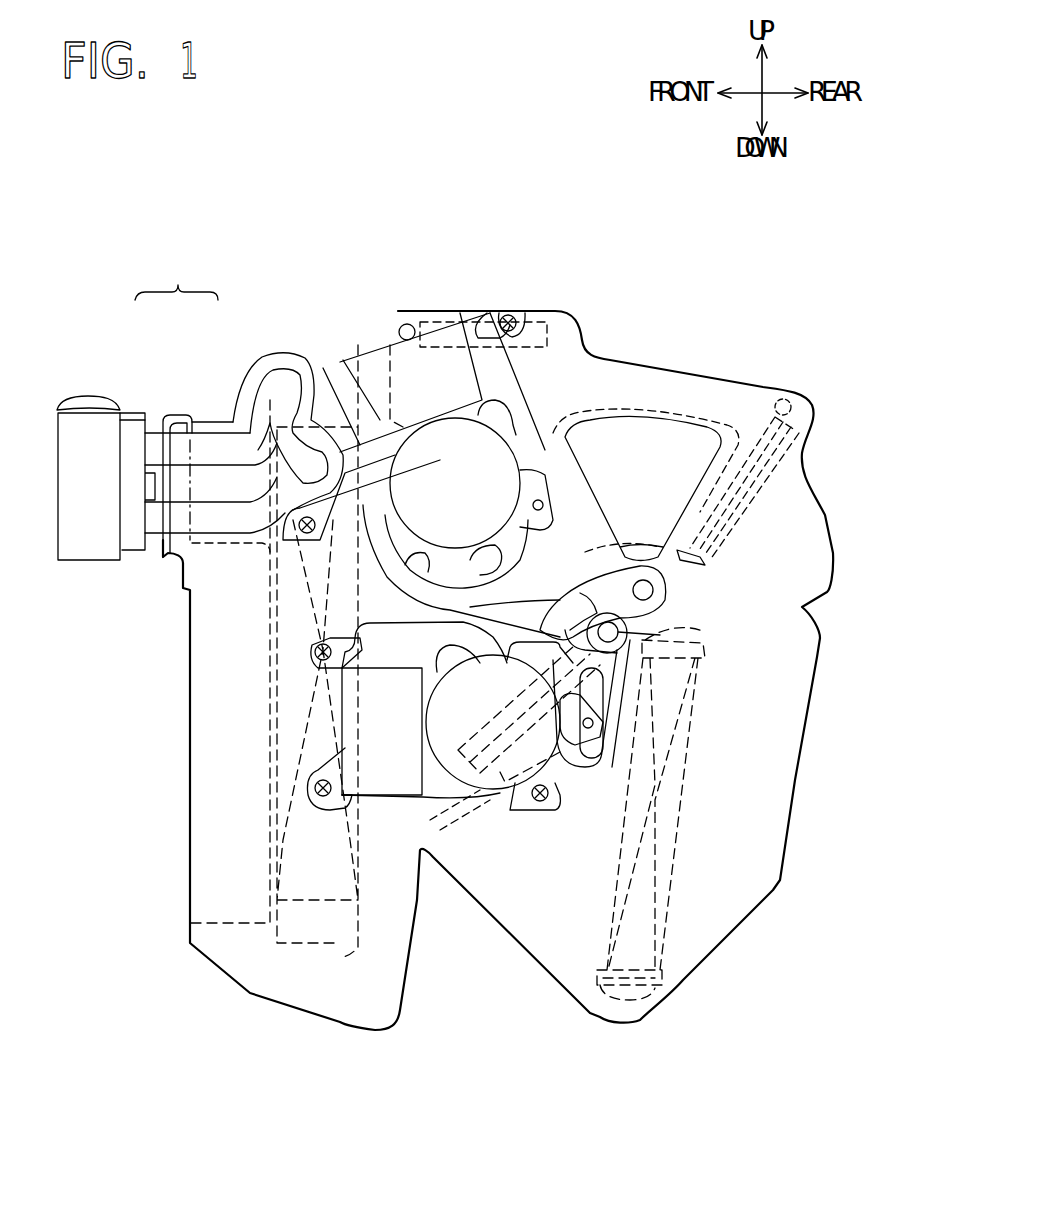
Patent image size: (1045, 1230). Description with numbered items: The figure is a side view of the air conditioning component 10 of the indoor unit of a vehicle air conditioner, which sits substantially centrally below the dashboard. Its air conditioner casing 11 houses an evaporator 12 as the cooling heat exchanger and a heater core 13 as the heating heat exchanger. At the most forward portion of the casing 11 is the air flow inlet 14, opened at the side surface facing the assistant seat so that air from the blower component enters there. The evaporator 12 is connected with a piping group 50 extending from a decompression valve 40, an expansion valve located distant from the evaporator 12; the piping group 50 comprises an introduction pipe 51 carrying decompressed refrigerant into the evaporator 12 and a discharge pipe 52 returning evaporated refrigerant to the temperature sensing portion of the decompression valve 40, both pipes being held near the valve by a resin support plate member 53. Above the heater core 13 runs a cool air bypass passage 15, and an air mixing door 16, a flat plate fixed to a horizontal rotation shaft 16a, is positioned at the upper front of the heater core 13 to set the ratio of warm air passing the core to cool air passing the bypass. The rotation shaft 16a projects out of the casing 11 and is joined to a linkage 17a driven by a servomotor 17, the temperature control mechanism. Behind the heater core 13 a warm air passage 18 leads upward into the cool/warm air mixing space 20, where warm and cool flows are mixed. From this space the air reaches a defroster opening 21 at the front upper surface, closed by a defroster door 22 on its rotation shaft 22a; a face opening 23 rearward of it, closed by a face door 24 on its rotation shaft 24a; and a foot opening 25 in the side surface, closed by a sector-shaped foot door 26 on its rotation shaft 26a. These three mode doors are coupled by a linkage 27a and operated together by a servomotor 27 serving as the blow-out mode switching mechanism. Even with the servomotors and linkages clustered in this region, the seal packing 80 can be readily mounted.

The air conditioning component 10 is at (865, 296).
The air conditioner casing 11 is at (825, 530).
The evaporator 12 is at (287, 940).
The heater core 13 is at (655, 940).
The air flow inlet 14 is at (220, 878).
The cool air bypass passage 15 is at (553, 440).
The air mixing door 16 is at (528, 790).
The rotation shaft 16a is at (700, 657).
The servomotor 17 is at (342, 728).
The linkage 17a is at (603, 850).
The warm air passage 18 is at (737, 776).
The cool/warm air mixing space 20 is at (640, 487).
The defroster opening 21 is at (458, 311).
The defroster door 22 is at (505, 315).
The rotation shaft 22a is at (400, 308).
The face opening 23 is at (716, 372).
The face door 24 is at (750, 475).
The rotation shaft 24a is at (797, 407).
The foot opening 25 is at (655, 483).
The foot door 26 is at (673, 485).
The rotation shaft 26a is at (665, 593).
The servomotor 27 is at (372, 380).
The linkage 27a is at (588, 485).
The decompression valve 40 is at (80, 552).
The piping group 50 is at (176, 277).
The introduction pipe 51 is at (168, 414).
The discharge pipe 52 is at (205, 520).
The support plate member 53 is at (163, 443).
The seal packing 80 is at (282, 355).